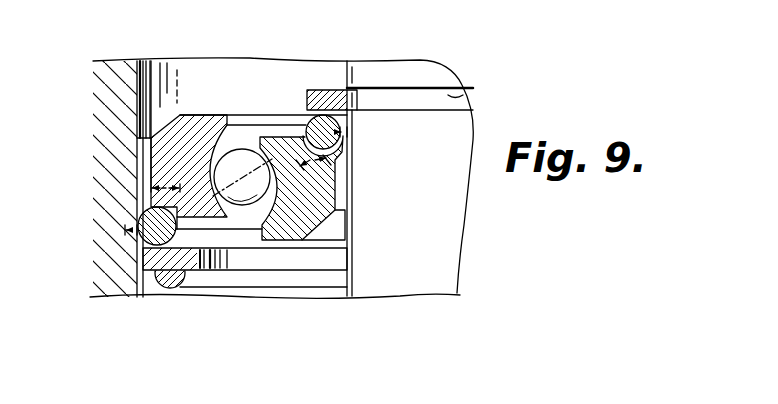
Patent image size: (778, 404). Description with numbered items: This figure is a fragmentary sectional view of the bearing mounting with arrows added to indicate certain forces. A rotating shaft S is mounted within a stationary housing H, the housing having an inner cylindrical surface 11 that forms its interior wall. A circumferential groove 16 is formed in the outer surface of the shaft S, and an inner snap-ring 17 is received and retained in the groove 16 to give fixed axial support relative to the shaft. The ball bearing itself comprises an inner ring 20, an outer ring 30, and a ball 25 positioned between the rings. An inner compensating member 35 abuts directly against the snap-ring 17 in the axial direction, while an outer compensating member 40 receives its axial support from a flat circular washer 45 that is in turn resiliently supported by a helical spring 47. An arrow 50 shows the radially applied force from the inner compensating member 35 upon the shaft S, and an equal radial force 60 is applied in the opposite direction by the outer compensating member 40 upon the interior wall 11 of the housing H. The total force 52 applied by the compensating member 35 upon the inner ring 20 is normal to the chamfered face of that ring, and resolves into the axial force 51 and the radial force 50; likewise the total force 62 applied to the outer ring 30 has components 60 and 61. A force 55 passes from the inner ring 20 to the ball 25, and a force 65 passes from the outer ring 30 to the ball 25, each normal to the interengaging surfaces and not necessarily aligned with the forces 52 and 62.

The inner cylindrical surface 11 is at (150, 63).
The circumferential groove 16 is at (470, 96).
The inner snap-ring 17 is at (323, 100).
The inner ring 20 is at (293, 223).
The ball 25 is at (237, 153).
The outer ring 30 is at (193, 127).
The inner compensating member 35 is at (304, 165).
The outer compensating member 40 is at (90, 283).
The flat circular washer 45 is at (152, 250).
The helical spring 47 is at (172, 288).
The radial force 50 is at (355, 132).
The axial force 51 is at (330, 160).
The total force 52 is at (336, 207).
The force 55 is at (278, 152).
The radial force 60 is at (182, 188).
The axial force component 61 is at (148, 189).
The total force 62 is at (134, 231).
The force 65 is at (205, 203).
The shaft S is at (450, 222).
The housing H is at (113, 297).